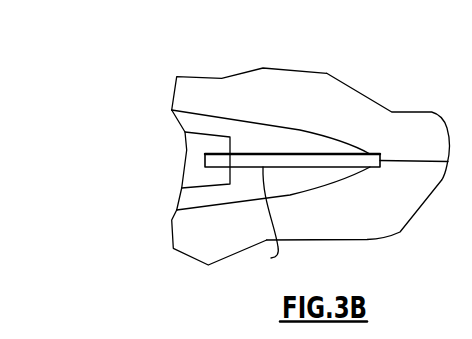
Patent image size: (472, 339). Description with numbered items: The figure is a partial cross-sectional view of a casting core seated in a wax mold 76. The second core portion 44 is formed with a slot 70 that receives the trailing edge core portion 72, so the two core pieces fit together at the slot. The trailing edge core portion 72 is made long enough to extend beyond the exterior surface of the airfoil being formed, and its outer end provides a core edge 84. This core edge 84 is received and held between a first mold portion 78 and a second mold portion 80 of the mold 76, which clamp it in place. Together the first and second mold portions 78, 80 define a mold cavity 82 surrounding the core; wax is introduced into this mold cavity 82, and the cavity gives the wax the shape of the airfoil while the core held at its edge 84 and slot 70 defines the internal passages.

The second core portion 44 is at (197, 141).
The slot 70 is at (204, 164).
The trailing edge core portion 72 is at (271, 222).
The mold 76 is at (366, 76).
The first mold portion 78 is at (382, 122).
The second mold portion 80 is at (413, 185).
The mold cavity 82 is at (262, 128).
The core edge 84 is at (372, 155).